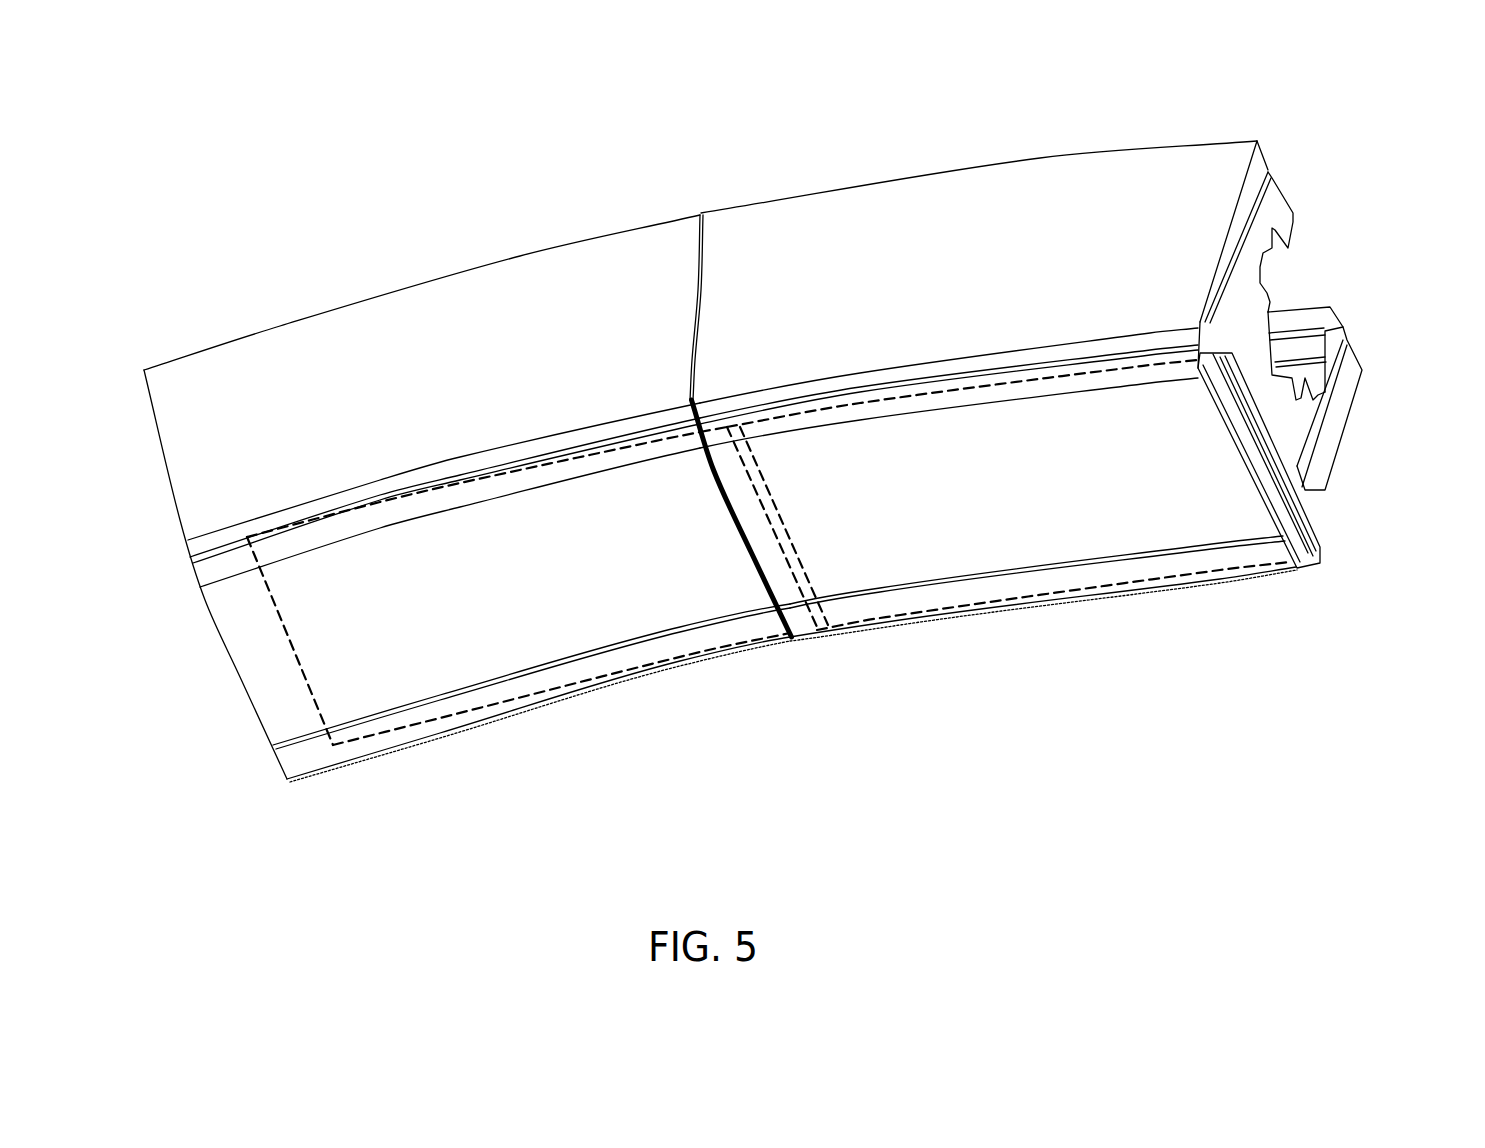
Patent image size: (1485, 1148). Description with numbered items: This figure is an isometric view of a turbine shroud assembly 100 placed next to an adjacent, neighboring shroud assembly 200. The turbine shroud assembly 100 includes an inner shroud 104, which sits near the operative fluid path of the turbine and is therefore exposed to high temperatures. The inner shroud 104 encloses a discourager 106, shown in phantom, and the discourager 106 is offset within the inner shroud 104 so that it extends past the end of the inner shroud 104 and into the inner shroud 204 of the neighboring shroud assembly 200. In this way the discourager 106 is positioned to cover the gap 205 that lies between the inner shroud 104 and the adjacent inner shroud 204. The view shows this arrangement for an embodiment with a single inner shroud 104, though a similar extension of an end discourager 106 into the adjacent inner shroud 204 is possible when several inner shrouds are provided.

The turbine shroud assembly 100 is at (298, 295).
The inner shroud 104 is at (298, 670).
The discourager 106 is at (390, 612).
The neighboring shroud assembly 200 is at (952, 147).
The inner shroud of neighboring shroud assembly 204 is at (1233, 563).
The gap 205 is at (791, 640).